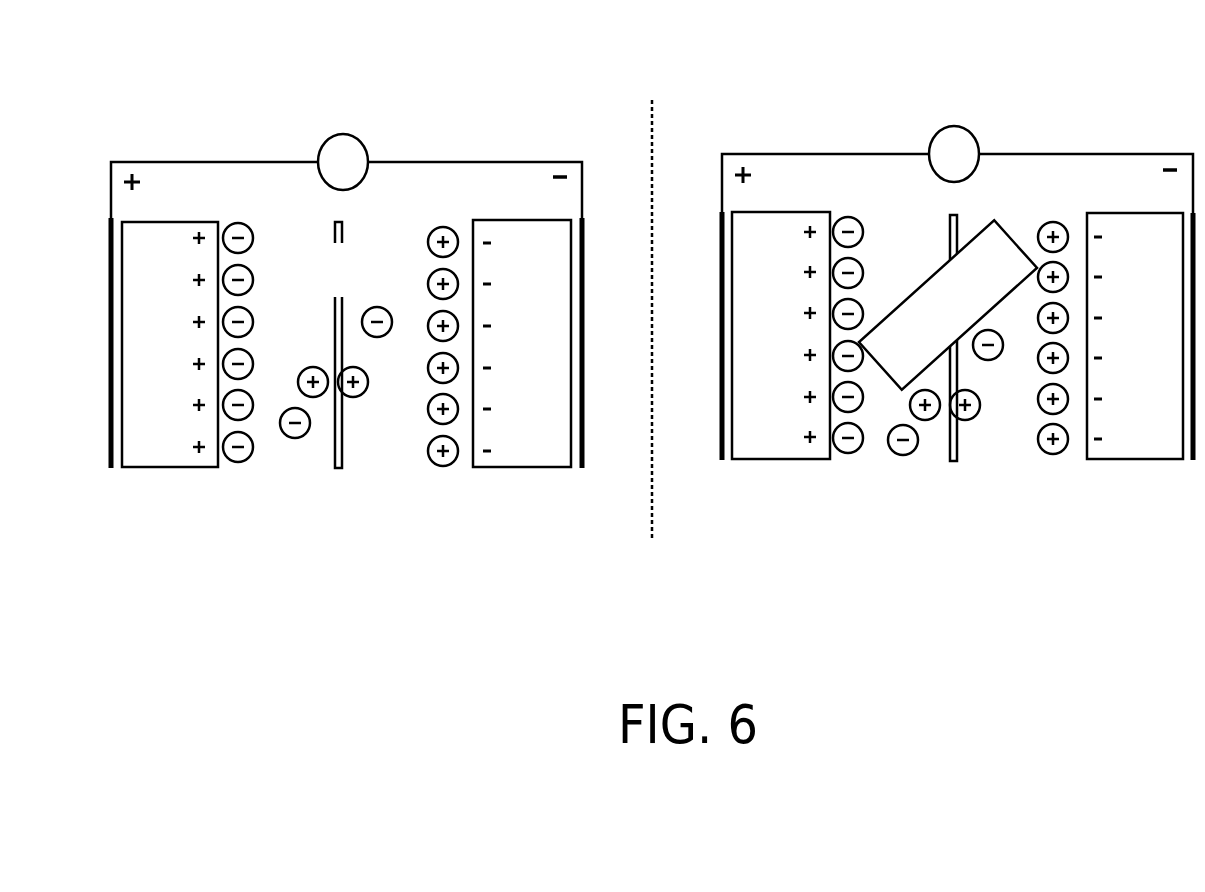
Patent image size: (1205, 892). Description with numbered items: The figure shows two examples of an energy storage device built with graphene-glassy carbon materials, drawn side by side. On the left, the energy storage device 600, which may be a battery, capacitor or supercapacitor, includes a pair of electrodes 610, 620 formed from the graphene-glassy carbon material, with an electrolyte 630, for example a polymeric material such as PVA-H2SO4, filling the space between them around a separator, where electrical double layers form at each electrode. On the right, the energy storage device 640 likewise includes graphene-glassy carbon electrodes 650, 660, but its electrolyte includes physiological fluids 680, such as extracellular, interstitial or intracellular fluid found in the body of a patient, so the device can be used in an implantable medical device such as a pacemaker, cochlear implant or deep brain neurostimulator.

The energy storage device 600 is at (300, 94).
The electrode 610 is at (192, 222).
The electrode 620 is at (532, 225).
The electrolyte 630 is at (422, 253).
The energy storage device 640 is at (910, 84).
The electrode 650 is at (800, 213).
The electrode 660 is at (1142, 217).
The physiological fluids 680 is at (1020, 255).